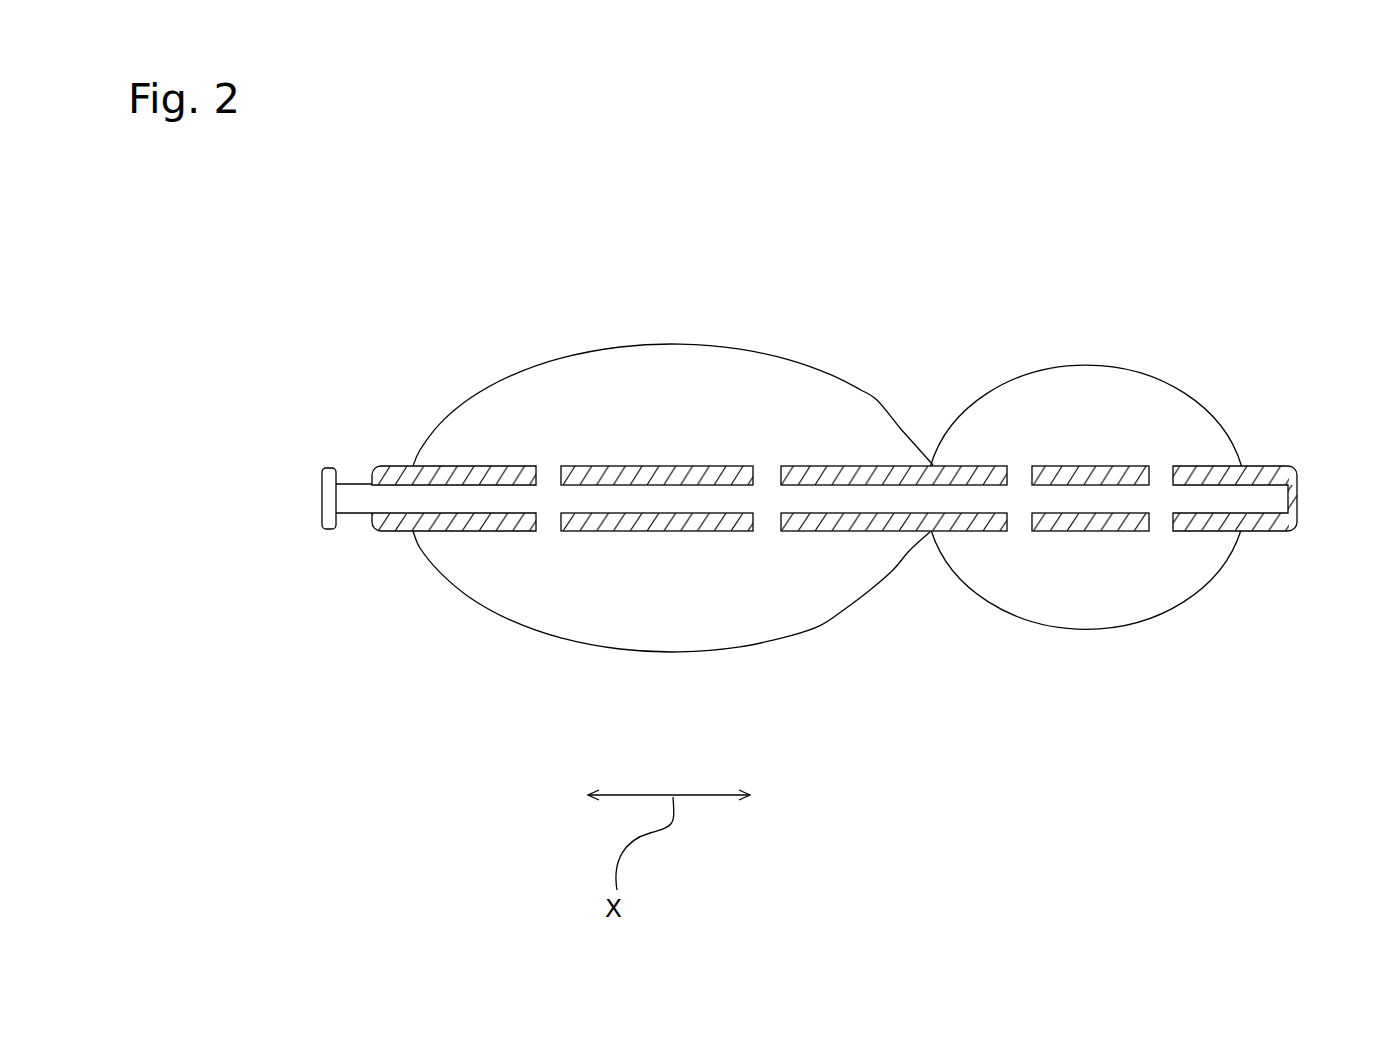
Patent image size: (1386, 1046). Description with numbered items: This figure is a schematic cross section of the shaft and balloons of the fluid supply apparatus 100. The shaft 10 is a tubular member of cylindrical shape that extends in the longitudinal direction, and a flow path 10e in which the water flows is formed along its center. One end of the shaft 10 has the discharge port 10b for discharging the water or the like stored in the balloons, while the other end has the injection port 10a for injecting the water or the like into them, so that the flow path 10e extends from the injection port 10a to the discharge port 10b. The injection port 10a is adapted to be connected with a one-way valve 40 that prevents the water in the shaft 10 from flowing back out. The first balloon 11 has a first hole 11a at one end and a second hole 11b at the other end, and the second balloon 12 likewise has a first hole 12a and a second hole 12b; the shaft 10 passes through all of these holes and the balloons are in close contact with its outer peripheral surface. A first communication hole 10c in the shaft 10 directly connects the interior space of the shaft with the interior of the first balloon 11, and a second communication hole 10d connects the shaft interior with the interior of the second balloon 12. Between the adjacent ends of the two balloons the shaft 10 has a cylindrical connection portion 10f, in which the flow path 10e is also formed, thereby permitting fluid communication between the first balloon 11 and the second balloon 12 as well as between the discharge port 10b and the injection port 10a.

The fluid supply apparatus 100 is at (1122, 323).
The shaft 10 is at (598, 472).
The injection port 10a is at (360, 468).
The discharge port 10b is at (1260, 532).
The first communication hole 10c is at (770, 463).
The second communication hole 10d is at (1162, 463).
The flow path 10e is at (845, 503).
The connection portion 10f is at (933, 532).
The first balloon 11 is at (528, 368).
The first hole 11a is at (413, 464).
The second hole 11b is at (935, 467).
The second balloon 12 is at (1015, 378).
The first hole 12a is at (932, 533).
The second hole 12b is at (1238, 467).
The one-way valve 40 is at (358, 503).